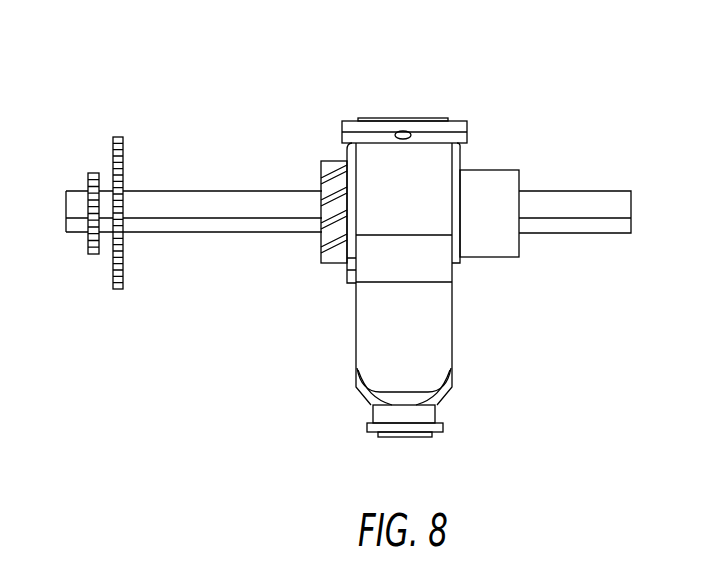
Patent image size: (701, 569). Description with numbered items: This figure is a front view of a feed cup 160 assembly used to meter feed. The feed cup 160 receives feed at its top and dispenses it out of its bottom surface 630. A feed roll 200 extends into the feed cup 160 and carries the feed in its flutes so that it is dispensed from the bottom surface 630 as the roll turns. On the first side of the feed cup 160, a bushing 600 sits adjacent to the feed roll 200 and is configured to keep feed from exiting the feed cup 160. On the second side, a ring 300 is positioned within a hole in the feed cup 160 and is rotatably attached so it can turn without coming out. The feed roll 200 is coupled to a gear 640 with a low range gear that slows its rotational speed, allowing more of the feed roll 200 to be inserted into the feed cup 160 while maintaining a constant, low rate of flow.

The gear 640 is at (118, 137).
The feed roll 200 is at (330, 243).
The ring 300 is at (345, 162).
The feed cup 160 is at (413, 126).
The bushing 600 is at (490, 187).
The bottom surface 630 is at (425, 417).